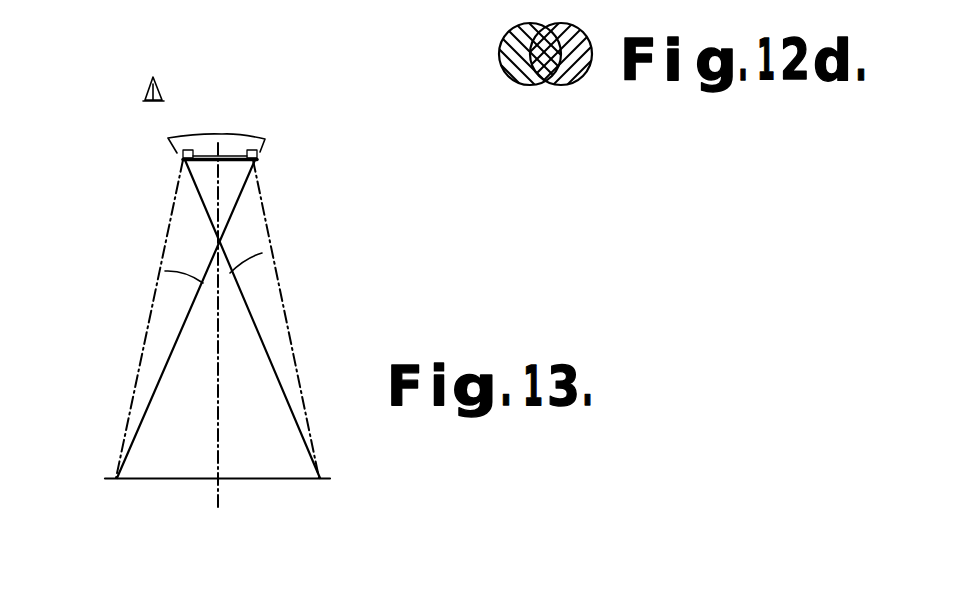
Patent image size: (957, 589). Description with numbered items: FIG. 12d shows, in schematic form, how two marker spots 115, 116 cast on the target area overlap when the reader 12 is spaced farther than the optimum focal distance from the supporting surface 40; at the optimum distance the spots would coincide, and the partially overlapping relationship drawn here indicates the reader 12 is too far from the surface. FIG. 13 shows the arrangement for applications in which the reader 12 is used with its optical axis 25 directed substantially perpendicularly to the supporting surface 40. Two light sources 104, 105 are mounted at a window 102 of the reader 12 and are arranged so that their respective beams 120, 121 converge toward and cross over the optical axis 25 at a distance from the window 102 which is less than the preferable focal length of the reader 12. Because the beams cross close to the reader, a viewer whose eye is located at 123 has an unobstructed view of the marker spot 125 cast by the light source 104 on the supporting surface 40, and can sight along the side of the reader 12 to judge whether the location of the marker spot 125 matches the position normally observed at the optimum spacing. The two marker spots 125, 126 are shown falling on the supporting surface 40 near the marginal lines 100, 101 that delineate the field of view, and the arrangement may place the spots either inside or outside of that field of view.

In FIG. 13, the reader 12 is at (201, 142).
In FIG. 13, the optical axis 25 is at (217, 363).
In FIG. 13, the supporting surface 40 is at (253, 477).
In FIG. 13, the marginal line 100 is at (142, 355).
In FIG. 13, the marginal line 101 is at (293, 358).
In FIG. 13, the window 102 is at (237, 153).
In FIG. 13, the light source 104 is at (260, 152).
In FIG. 13, the light source 105 is at (177, 153).
In FIG. 12D, the marker spot 115 is at (508, 77).
In FIG. 12D, the marker spot 116 is at (567, 23).
In FIG. 13, the beam 120 is at (165, 271).
In FIG. 13, the beam 121 is at (262, 253).
In FIG. 13, the eye location 123 is at (147, 90).
In FIG. 13, the marker spot 125 is at (113, 475).
In FIG. 13, the marker spot 126 is at (326, 474).